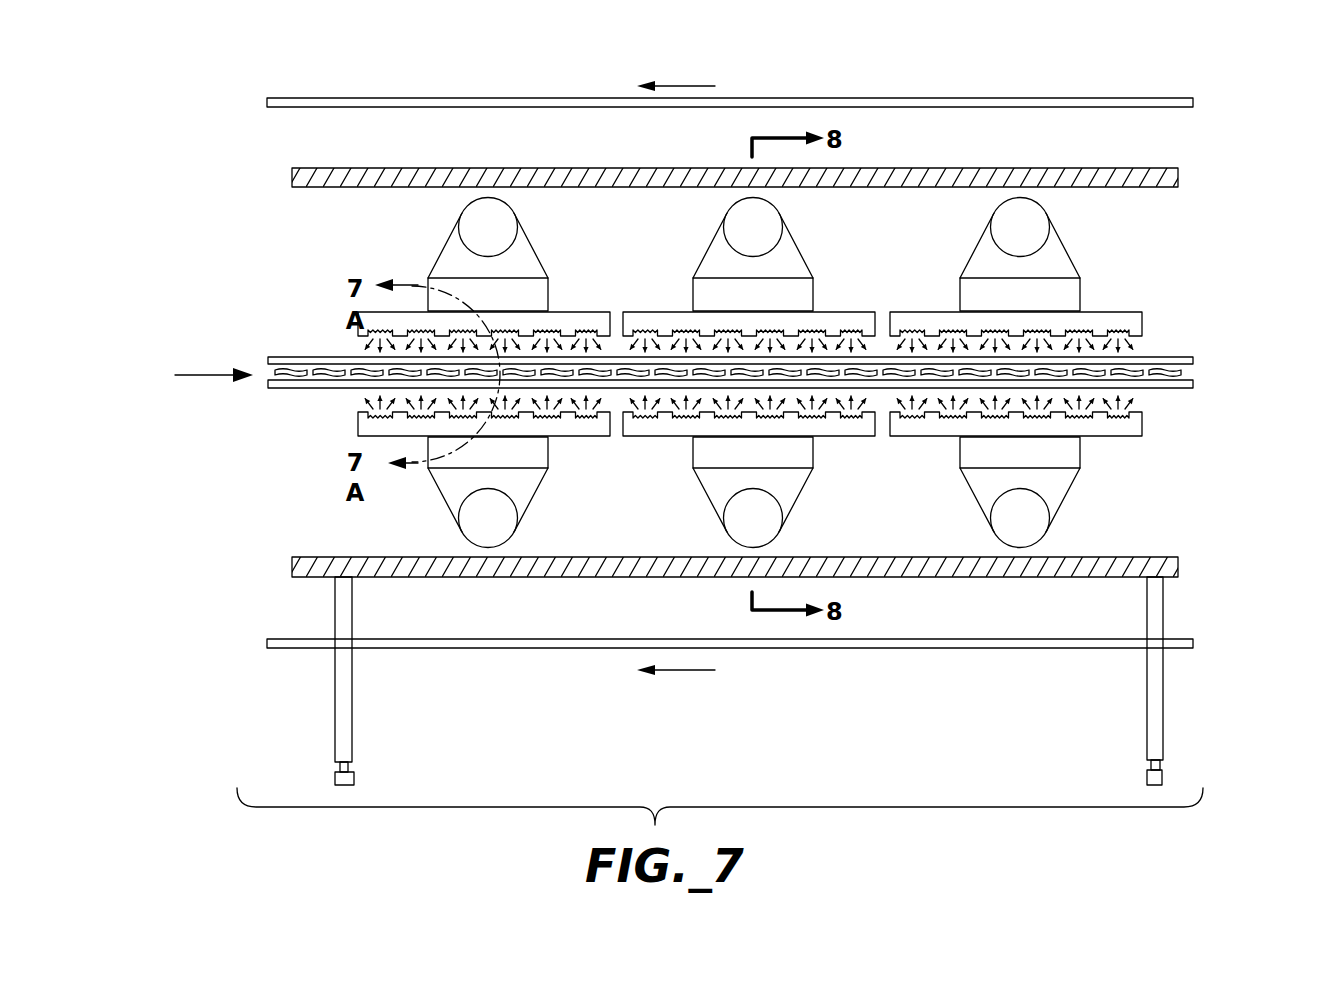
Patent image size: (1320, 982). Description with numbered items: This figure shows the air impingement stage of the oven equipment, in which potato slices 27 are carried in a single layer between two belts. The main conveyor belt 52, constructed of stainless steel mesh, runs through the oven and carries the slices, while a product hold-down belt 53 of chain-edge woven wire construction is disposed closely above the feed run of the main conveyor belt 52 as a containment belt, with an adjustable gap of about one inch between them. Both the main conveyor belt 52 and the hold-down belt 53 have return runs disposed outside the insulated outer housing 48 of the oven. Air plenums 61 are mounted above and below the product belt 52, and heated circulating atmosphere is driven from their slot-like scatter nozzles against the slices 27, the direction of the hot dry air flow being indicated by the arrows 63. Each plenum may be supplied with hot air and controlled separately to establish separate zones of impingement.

The potato slices 27 is at (273, 370).
The insulated outer housing 48 is at (1173, 187).
The main conveyor belt 52 is at (1182, 389).
The product hold-down belt 53 is at (1138, 98).
The air plenums 61 is at (446, 250).
The arrows 63 is at (1133, 345).